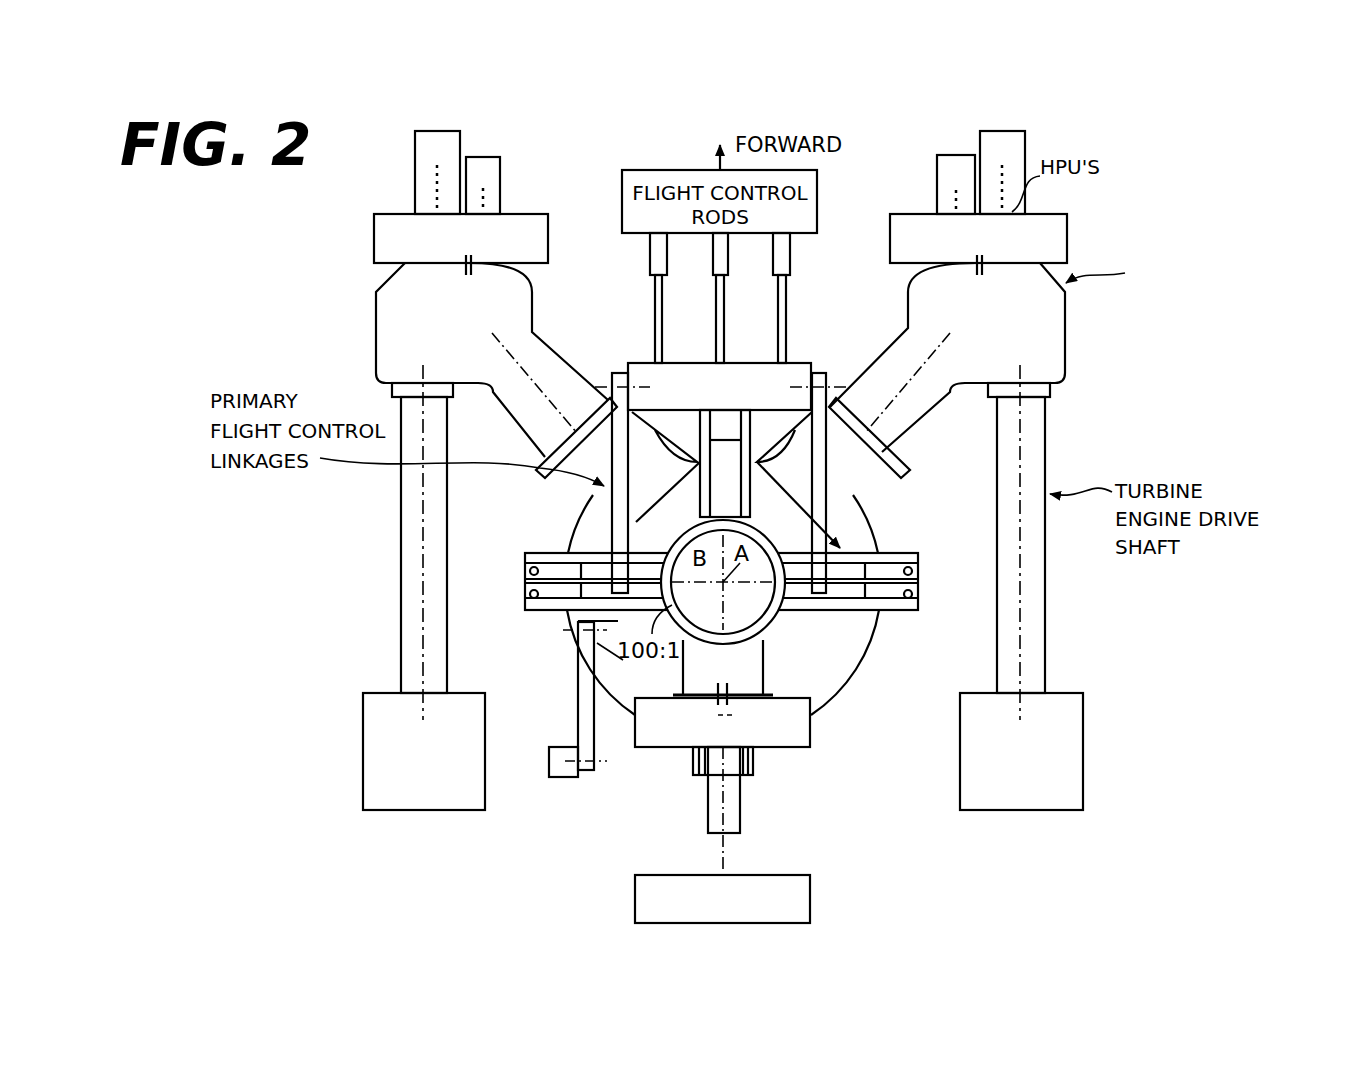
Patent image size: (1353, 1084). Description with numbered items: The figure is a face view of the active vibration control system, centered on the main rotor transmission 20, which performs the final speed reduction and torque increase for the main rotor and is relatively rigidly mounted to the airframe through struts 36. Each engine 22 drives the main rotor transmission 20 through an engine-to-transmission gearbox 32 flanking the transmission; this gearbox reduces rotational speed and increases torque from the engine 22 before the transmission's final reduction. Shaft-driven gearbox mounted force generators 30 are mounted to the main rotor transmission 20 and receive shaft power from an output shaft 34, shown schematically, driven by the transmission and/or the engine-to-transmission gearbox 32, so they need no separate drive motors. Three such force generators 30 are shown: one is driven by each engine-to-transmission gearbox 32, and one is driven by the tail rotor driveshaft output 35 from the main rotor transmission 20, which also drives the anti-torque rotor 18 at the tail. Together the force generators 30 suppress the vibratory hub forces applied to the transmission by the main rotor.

The anti-torque rotor 18 is at (812, 893).
The main rotor transmission 20 is at (870, 652).
The engine 22 is at (443, 762).
The gearbox mounted force generator (GMFG) 30 is at (519, 218).
The engine-to-transmission gearbox 32 is at (466, 330).
The output shaft 34 is at (470, 266).
The tail rotor driveshaft output 35 is at (707, 832).
The struts 36 is at (485, 715).